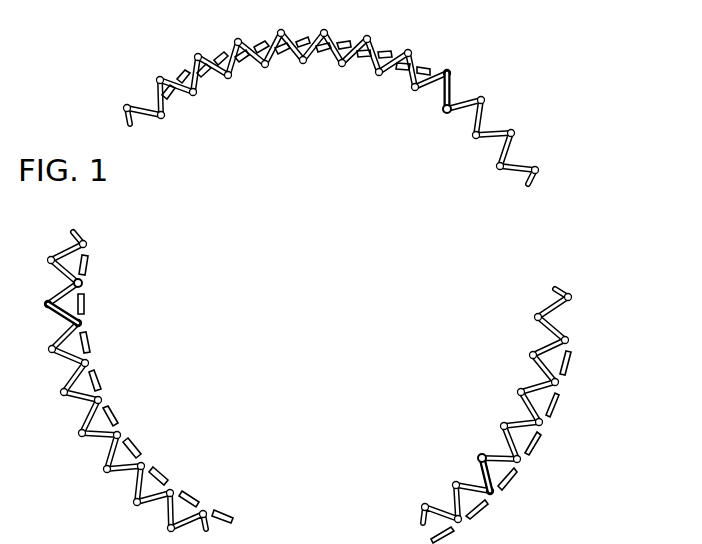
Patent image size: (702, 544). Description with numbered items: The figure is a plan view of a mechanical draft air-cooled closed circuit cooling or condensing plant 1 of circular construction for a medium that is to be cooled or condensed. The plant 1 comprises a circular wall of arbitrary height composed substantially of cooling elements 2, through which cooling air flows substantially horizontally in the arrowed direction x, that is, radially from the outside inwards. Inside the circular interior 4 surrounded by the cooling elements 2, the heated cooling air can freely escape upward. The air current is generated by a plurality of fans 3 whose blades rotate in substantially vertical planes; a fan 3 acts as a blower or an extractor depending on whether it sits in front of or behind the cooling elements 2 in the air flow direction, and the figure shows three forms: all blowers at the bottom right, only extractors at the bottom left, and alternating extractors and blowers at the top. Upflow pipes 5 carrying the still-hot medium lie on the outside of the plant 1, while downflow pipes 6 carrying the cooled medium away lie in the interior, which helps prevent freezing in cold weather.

The cooling or condensing plant 1 is at (311, 287).
The cooling elements 2 is at (158, 97).
The fans 3 is at (322, 48).
The circular interior 4 is at (445, 283).
The upflow pipes 5 is at (448, 73).
The downflow pipes 6 is at (447, 112).